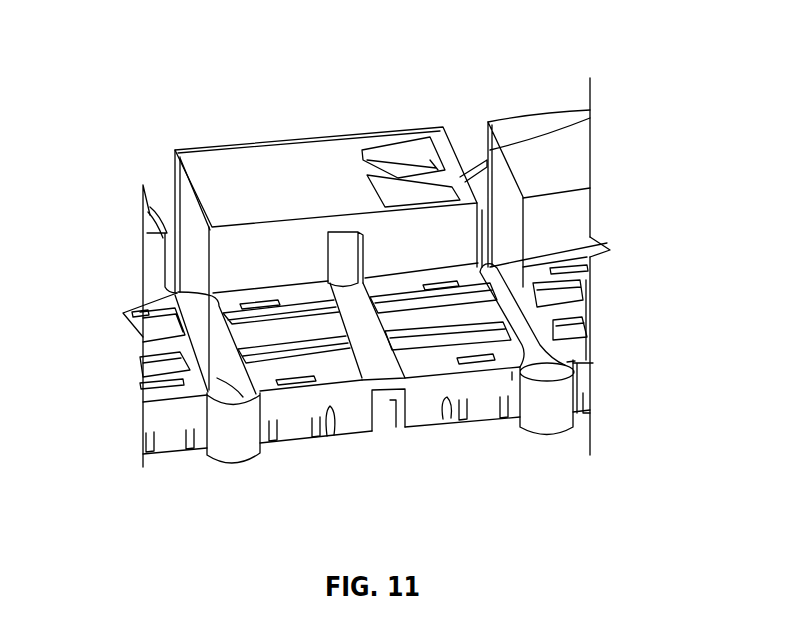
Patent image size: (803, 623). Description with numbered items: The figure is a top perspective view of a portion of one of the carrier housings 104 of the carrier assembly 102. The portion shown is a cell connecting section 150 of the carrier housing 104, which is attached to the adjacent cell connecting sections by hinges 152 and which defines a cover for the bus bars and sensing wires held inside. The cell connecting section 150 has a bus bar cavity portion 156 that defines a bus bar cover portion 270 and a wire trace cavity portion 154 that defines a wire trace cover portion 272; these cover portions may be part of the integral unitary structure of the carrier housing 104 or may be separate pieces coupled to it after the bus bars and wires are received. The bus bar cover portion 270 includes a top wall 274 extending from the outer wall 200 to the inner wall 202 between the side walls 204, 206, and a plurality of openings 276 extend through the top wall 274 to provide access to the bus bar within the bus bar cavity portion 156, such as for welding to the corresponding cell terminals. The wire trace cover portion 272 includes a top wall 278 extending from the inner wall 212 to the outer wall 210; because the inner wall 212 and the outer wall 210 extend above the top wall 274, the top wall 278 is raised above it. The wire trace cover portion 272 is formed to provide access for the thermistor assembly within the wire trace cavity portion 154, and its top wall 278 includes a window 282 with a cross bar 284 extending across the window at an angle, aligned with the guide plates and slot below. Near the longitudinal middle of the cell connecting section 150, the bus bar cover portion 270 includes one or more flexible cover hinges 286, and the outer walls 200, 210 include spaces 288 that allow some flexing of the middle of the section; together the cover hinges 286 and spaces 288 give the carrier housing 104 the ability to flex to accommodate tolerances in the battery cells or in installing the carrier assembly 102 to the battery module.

The carrier assembly 102 is at (120, 46).
The carrier housing 104 is at (312, 152).
The cell connecting section 150 is at (515, 374).
The hinge 152 is at (592, 118).
The wire trace cavity portion 154 is at (243, 172).
The bus bar cavity portion 156 is at (349, 376).
The outer wall 200 is at (430, 415).
The inner wall 202 is at (122, 315).
The side wall 204 is at (200, 350).
The side wall 206 is at (552, 327).
The outer wall 210 is at (173, 228).
The inner wall 212 is at (210, 296).
The bus bar cover portion 270 is at (538, 288).
The wire trace cover portion 272 is at (465, 243).
The top wall 274 is at (611, 247).
The openings 276 is at (259, 365).
The top wall 278 is at (338, 175).
The window 282 is at (400, 153).
The cross bar 284 is at (433, 175).
The flexible cover hinge 286 is at (385, 392).
The space 288 is at (398, 430).